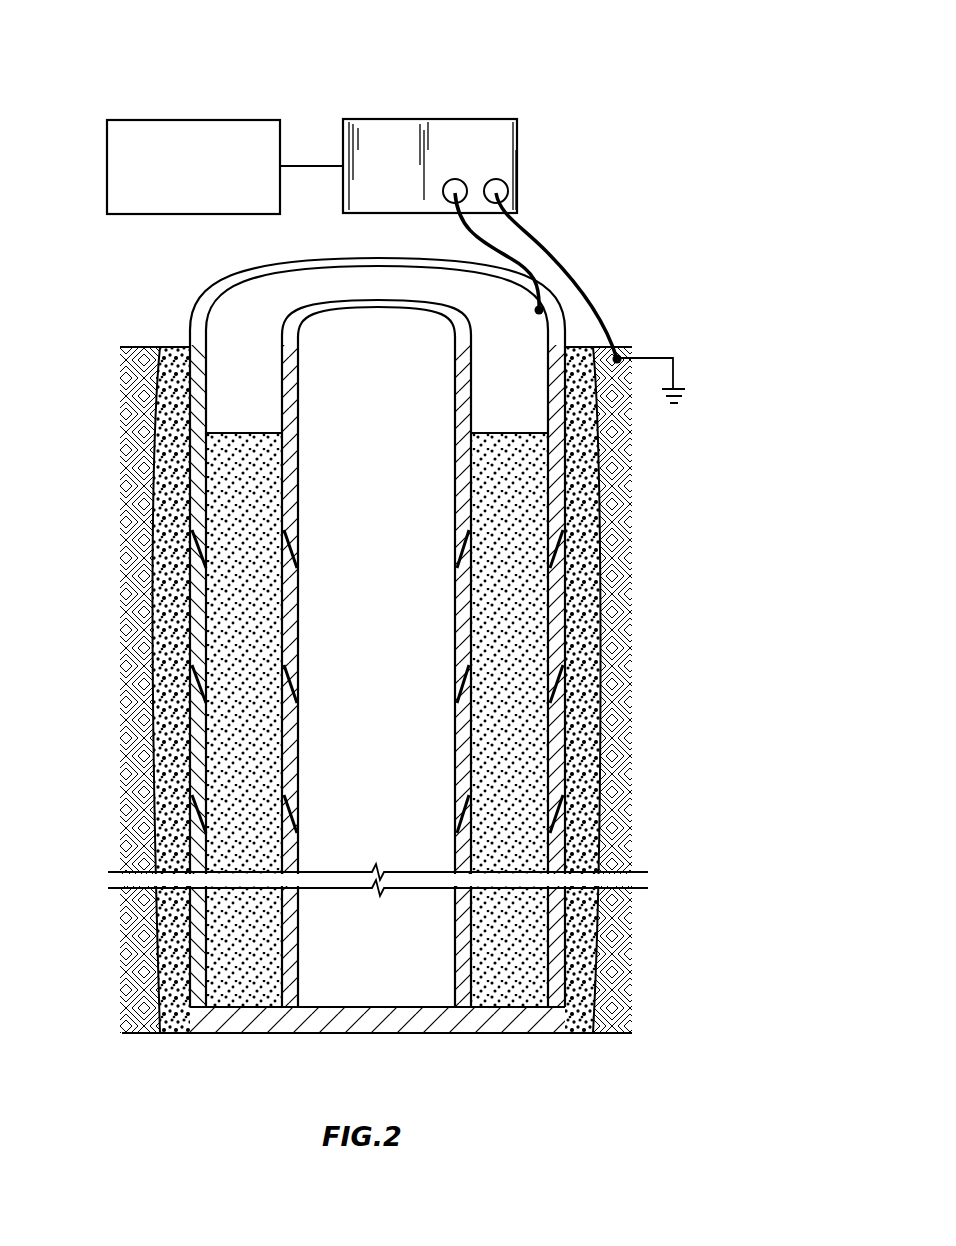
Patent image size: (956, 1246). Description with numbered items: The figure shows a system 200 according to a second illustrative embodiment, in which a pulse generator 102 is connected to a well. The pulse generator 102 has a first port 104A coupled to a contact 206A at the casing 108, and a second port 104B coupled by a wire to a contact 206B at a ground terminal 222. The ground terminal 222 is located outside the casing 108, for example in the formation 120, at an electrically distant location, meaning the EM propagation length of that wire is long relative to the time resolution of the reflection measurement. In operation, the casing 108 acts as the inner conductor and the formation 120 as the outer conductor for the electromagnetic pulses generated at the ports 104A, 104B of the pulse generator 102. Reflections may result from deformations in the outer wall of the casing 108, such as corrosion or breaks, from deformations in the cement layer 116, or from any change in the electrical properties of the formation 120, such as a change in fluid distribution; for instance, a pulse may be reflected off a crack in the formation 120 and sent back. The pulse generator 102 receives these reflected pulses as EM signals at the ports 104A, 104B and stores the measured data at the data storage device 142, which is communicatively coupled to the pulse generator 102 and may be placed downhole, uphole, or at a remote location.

The system 200 is at (676, 102).
The pulse generator 102 is at (493, 136).
The data storage device 142 is at (214, 183).
The first port 104A is at (462, 184).
The second port 104B is at (505, 190).
The contact 206A is at (541, 310).
The contact 206B is at (619, 358).
The ground terminal 222 is at (674, 377).
The casing 108 is at (562, 413).
The formation 120 is at (150, 463).
The cement layer 116 is at (583, 940).